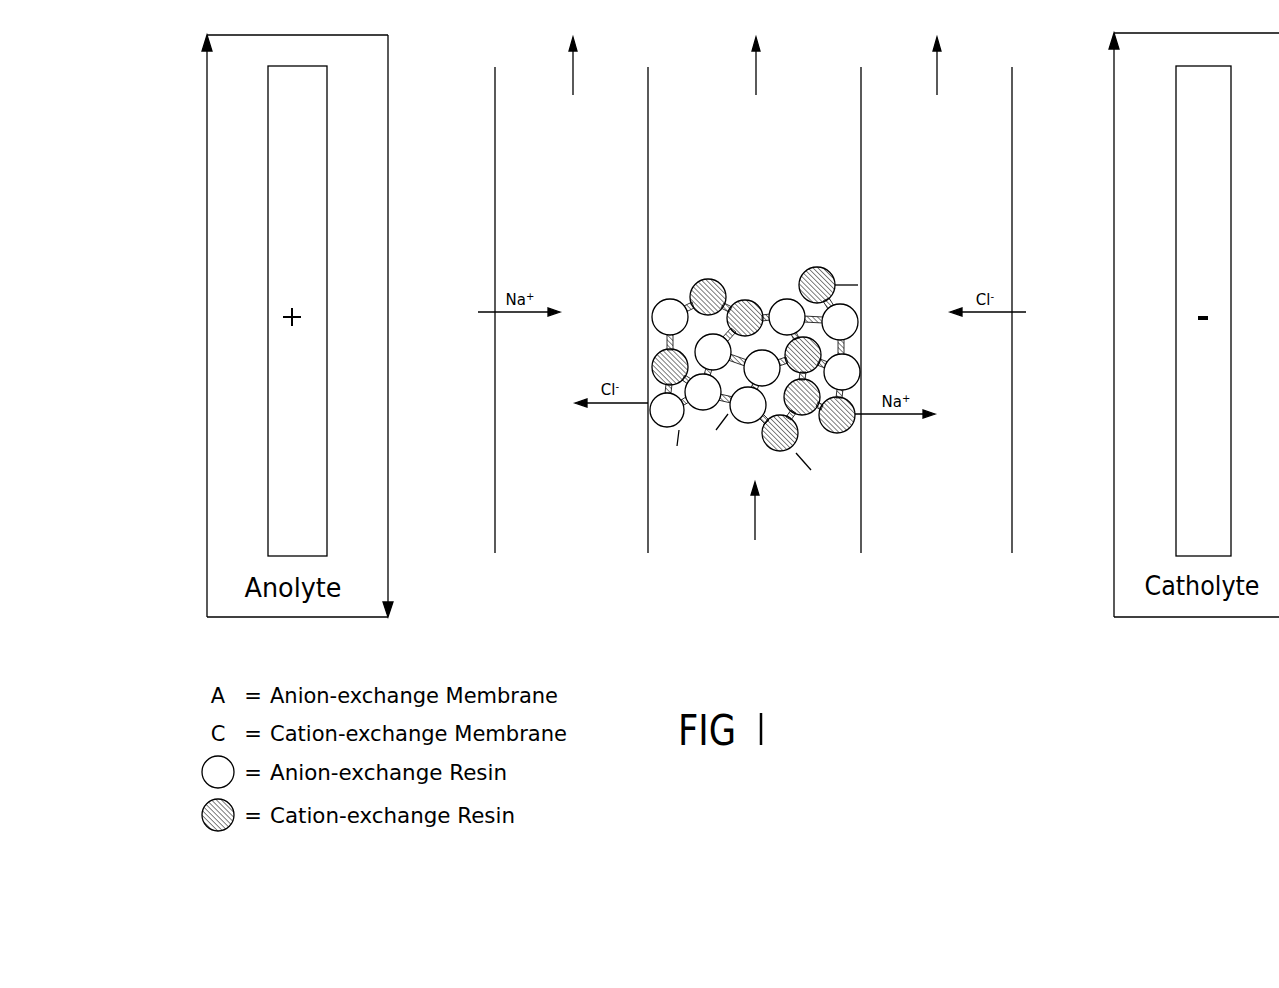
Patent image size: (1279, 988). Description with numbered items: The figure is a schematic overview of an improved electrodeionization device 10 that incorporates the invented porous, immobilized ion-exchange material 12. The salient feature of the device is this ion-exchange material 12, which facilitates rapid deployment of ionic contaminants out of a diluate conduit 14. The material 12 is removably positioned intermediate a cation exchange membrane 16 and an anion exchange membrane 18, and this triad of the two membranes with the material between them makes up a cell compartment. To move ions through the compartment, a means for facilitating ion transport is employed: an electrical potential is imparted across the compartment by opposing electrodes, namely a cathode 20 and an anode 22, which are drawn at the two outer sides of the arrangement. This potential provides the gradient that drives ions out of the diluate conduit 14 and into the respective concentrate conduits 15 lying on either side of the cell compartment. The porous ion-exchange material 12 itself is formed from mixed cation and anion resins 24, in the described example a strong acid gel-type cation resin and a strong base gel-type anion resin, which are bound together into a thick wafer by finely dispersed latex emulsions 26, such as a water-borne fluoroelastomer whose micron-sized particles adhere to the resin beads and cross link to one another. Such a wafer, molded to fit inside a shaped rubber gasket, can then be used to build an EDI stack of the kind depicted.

The electrodeionization device 10 is at (848, 575).
The porous immobilized ion-exchange material 12 is at (798, 295).
The diluate conduit 14 is at (768, 127).
The concentrate conduits 15 is at (588, 135).
The cation exchange membrane 16 is at (861, 177).
The anion exchange membrane 18 is at (645, 165).
The cathode 20 is at (1190, 447).
The anode 22 is at (308, 498).
The mixed cation and anion resins 24 is at (700, 412).
The latex emulsions 26 is at (665, 342).